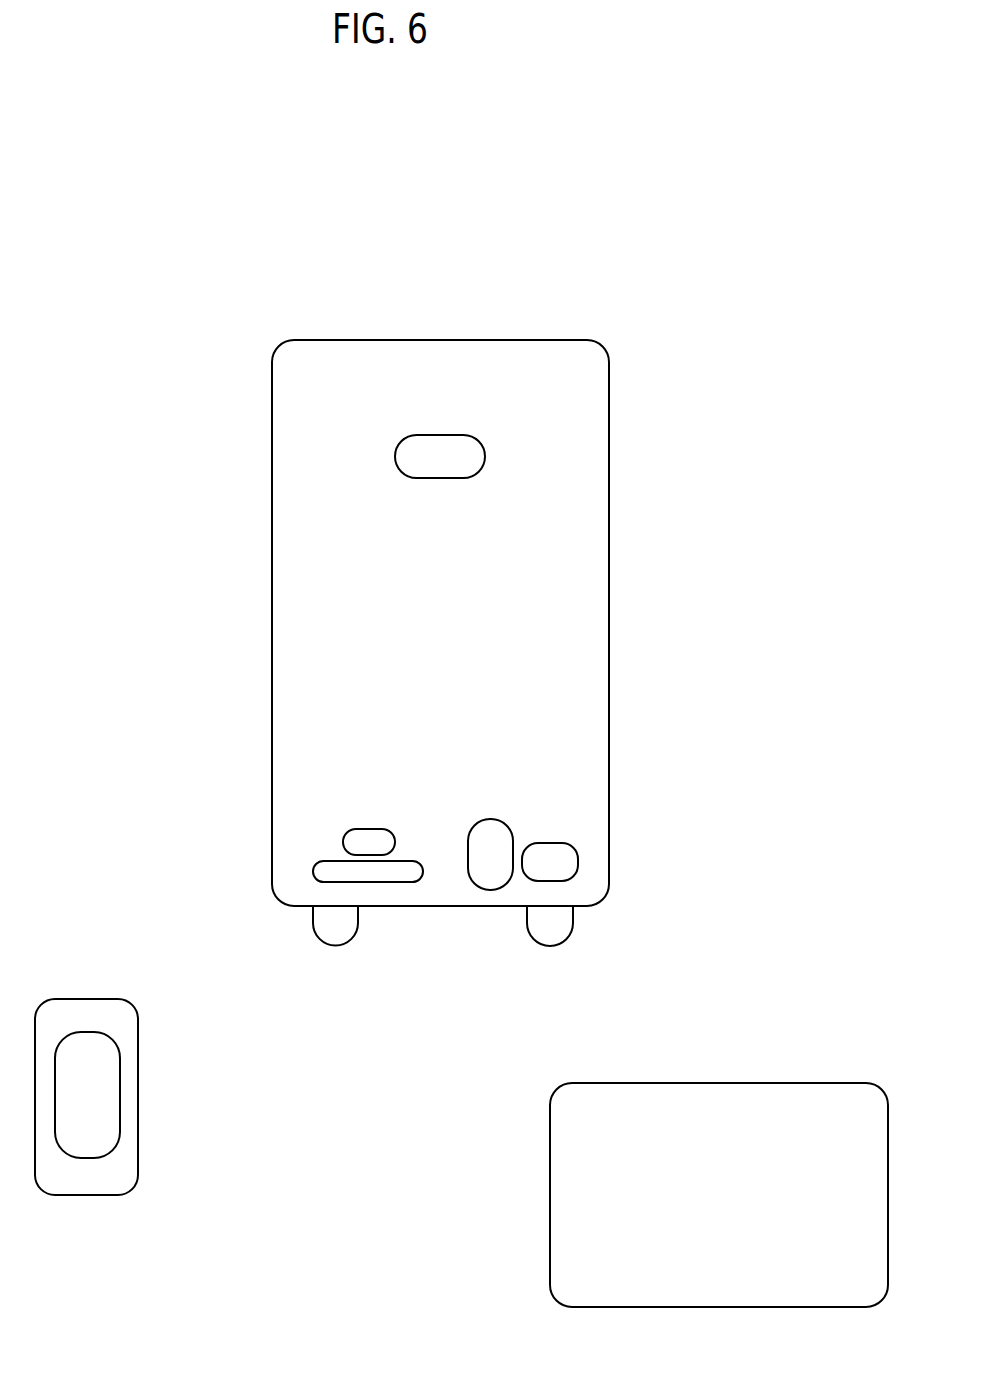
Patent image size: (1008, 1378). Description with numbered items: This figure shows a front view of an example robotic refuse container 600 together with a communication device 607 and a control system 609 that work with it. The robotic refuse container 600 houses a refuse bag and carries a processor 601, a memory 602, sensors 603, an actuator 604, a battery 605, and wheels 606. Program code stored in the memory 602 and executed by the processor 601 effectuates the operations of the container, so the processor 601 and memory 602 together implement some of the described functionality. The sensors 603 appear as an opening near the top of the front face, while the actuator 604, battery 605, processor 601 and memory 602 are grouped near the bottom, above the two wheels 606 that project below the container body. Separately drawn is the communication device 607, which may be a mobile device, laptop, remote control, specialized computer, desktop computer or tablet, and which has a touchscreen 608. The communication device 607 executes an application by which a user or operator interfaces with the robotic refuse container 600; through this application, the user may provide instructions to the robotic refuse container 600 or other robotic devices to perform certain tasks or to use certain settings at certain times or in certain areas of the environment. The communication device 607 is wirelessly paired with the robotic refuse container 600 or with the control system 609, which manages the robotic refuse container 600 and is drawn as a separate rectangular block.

The robotic refuse container 600 is at (610, 618).
The processor 601 is at (355, 828).
The memory 602 is at (580, 862).
The sensors 603 is at (486, 456).
The actuator 604 is at (512, 830).
The battery 605 is at (313, 870).
The wheels 606 is at (573, 922).
The communication device 607 is at (120, 1130).
The touchscreen 608 is at (138, 1050).
The control system 609 is at (548, 1195).